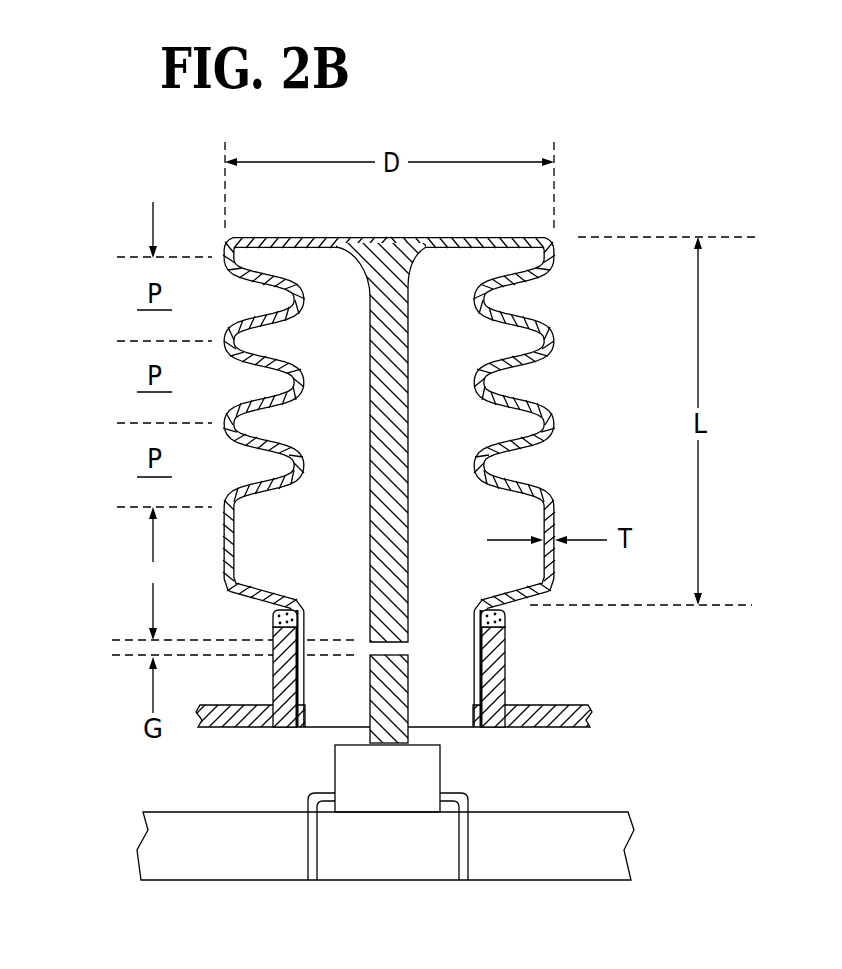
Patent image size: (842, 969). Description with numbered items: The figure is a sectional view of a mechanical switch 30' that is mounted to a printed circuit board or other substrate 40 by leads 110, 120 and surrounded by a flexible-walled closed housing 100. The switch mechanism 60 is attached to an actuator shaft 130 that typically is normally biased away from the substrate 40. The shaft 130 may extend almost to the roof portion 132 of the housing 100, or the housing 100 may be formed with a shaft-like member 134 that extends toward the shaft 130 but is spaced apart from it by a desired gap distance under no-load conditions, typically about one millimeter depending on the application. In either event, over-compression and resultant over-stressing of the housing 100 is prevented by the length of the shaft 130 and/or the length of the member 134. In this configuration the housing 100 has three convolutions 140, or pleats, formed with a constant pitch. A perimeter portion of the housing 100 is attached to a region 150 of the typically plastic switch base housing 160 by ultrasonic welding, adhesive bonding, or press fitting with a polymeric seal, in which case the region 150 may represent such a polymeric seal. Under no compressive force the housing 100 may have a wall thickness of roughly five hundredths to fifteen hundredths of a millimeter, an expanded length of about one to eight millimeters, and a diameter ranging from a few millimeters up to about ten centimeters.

The mechanical switch 30' is at (374, 433).
The flexible-walled closed housing 100 is at (562, 317).
The roof portion 132 is at (455, 266).
The shaft-like member 134 is at (413, 410).
The convolutions 140 is at (556, 422).
The region of the switch base housing 150 is at (503, 615).
The actuator shaft 130 is at (398, 695).
The switch base housing 160 is at (537, 705).
The lead 110 is at (318, 795).
The lead 120 is at (459, 798).
The substrate 40 is at (228, 863).
The switch mechanism 60 is at (382, 790).